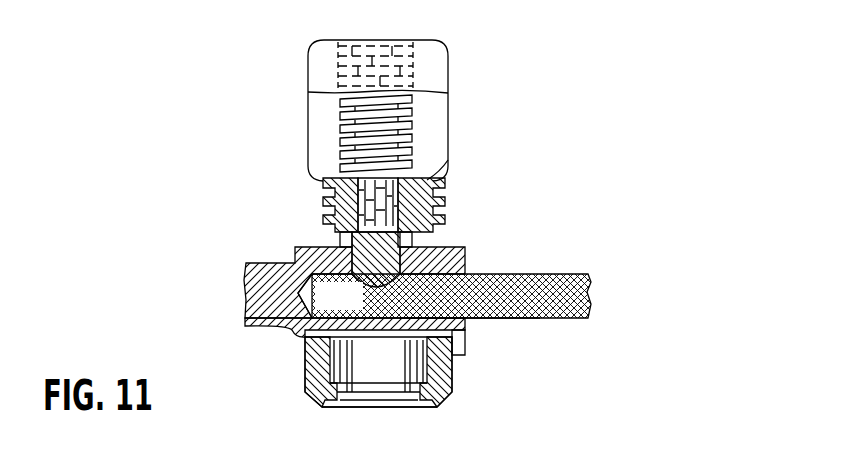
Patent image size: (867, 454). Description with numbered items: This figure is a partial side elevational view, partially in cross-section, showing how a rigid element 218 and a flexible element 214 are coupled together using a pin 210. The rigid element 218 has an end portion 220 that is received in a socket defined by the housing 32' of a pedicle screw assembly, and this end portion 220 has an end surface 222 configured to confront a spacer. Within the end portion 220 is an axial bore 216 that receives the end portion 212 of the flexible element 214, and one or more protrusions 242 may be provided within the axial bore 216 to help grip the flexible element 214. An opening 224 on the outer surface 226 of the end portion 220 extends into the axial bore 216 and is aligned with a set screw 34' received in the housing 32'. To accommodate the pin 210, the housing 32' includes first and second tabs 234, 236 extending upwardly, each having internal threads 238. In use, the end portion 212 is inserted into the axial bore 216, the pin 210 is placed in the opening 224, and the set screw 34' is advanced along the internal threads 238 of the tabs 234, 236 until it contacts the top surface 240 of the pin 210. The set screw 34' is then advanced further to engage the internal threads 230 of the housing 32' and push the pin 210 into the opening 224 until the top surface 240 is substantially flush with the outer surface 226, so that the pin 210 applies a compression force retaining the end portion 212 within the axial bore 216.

The second tab 236 is at (319, 79).
The first tab 234 is at (441, 104).
The internal threads 238 is at (337, 127).
The internal threads 230 is at (323, 183).
The outer surface 226 is at (341, 242).
The opening 224 is at (302, 248).
The pin 210 is at (408, 259).
The flexible element 214 is at (548, 274).
The end portion 212 is at (358, 308).
The axial bore 216 is at (455, 305).
The rigid element 218 is at (283, 329).
The housing 32' is at (328, 372).
The set screw 34' is at (474, 153).
The top surface 240 is at (446, 192).
The protrusions 242 is at (378, 316).
The end portion 220 is at (450, 394).
The end surface 222 is at (455, 352).